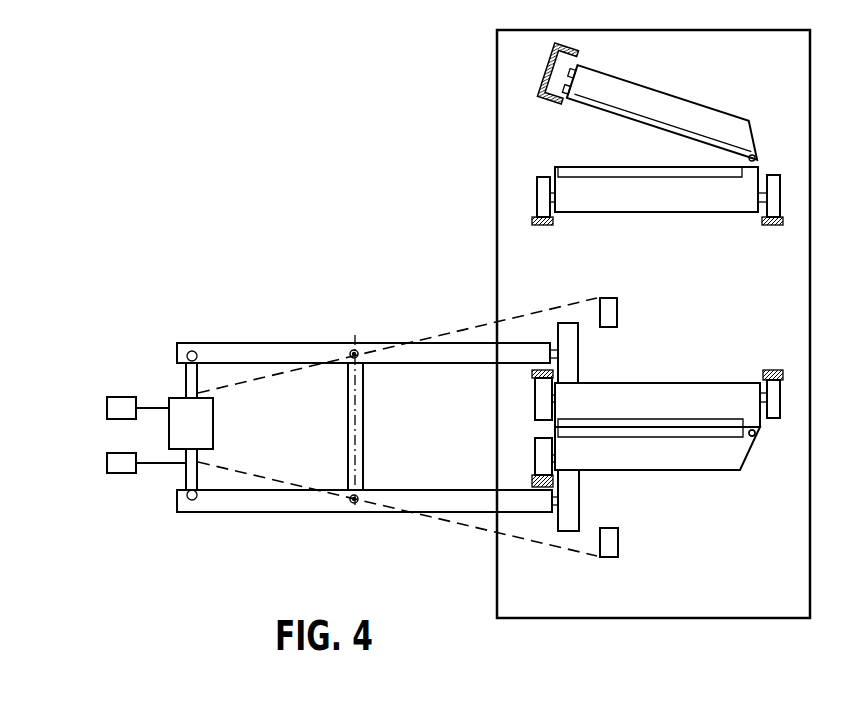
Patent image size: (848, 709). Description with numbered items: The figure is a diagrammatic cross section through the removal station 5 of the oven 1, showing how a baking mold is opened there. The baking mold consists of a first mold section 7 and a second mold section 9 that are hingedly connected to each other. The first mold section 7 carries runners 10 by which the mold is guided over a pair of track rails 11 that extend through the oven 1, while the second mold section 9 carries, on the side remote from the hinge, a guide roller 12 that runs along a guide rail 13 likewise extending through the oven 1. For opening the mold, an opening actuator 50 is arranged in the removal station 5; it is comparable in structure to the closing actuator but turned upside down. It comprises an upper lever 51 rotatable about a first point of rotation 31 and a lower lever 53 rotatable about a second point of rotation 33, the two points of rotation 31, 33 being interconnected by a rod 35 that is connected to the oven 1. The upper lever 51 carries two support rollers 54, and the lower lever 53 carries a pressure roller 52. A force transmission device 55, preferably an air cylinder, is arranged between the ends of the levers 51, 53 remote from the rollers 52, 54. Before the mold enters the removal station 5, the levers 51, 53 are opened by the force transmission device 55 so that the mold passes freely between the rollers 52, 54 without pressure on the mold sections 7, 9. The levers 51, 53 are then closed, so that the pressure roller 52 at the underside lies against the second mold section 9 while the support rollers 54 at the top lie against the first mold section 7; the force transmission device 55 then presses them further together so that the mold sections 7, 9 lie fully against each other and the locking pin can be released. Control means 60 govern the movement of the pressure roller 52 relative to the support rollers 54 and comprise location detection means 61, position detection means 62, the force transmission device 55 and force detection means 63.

The oven 1 is at (493, 53).
The removal station 5 is at (780, 601).
The first mold section 7 is at (657, 213).
The second mold section 9 is at (665, 90).
The runners 10 is at (763, 430).
The track rails 11 is at (543, 226).
The guide roller 12 is at (535, 440).
The guide rail 13 is at (545, 100).
The first point of rotation 31 is at (357, 352).
The second point of rotation 33 is at (357, 504).
The rod 35 is at (363, 428).
The opening actuator 50 is at (347, 337).
The upper lever 51 is at (255, 343).
The pressure roller 52 is at (580, 500).
The lower lever 53 is at (255, 512).
The support rollers 54 is at (580, 350).
The force transmission device 55 is at (213, 428).
The control means 60 is at (105, 436).
The location detection means 61 is at (605, 298).
The position detection means 62 is at (122, 473).
The force detection means 63 is at (122, 397).